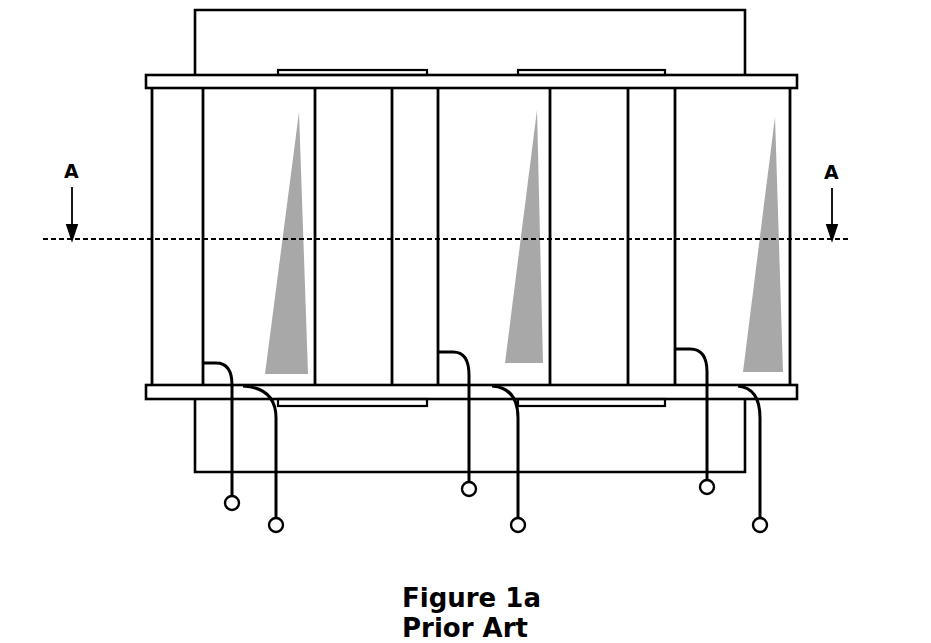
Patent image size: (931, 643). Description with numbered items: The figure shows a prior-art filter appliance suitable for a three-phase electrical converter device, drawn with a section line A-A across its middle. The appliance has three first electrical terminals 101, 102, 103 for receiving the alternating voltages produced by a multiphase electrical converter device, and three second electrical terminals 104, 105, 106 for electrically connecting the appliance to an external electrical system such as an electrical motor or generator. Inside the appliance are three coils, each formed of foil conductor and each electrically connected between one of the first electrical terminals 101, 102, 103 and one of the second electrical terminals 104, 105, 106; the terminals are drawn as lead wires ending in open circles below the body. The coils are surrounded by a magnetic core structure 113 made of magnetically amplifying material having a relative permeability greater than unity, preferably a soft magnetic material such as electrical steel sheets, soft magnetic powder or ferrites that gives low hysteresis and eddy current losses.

The first electrical terminal 101 is at (224, 507).
The first electrical terminal 102 is at (462, 493).
The first electrical terminal 103 is at (700, 491).
The second electrical terminal 104 is at (268, 529).
The second electrical terminal 105 is at (511, 529).
The second electrical terminal 106 is at (753, 529).
The magnetic core structure 113 is at (482, 51).